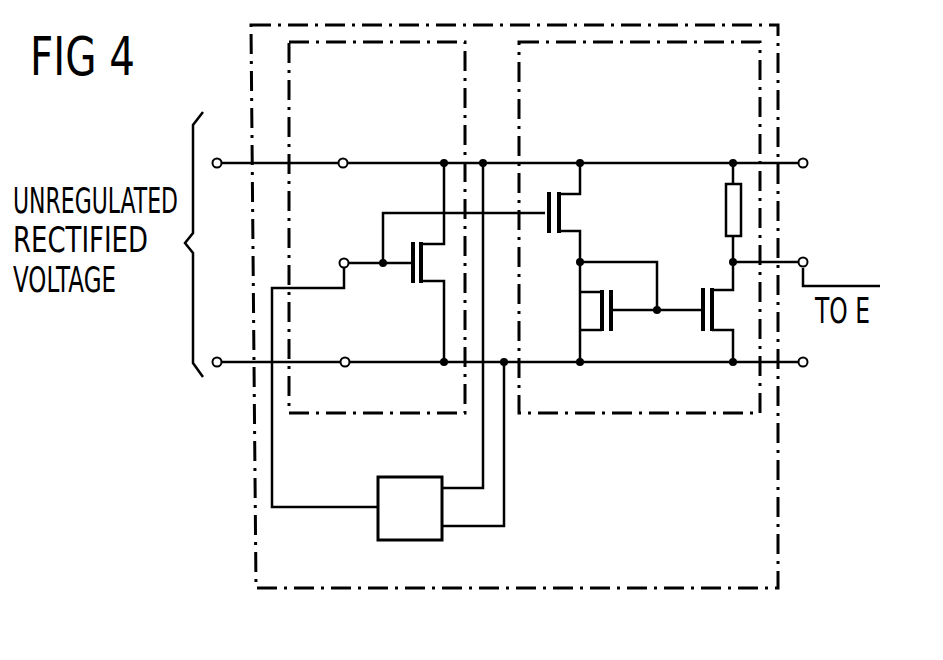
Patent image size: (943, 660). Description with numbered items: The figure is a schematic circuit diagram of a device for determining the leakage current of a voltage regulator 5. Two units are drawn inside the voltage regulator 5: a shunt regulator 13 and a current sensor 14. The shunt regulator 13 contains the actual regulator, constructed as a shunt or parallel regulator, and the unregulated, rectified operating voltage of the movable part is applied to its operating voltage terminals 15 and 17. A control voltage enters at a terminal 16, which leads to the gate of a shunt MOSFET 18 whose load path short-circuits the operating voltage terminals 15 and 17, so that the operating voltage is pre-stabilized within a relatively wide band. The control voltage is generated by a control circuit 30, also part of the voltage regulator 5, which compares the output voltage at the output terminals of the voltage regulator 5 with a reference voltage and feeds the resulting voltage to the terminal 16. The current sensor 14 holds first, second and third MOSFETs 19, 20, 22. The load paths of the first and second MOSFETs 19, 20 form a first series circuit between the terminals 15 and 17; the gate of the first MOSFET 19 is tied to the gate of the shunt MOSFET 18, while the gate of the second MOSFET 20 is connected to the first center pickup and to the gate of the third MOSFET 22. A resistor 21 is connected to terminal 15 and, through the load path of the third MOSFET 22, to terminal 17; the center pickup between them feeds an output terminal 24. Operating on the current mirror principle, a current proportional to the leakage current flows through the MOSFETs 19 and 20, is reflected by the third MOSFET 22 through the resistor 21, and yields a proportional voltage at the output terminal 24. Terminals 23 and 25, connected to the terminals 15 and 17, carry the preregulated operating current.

The voltage regulator 5 is at (780, 524).
The shunt regulator unit 13 is at (333, 413).
The current sensor unit 14 is at (651, 413).
The operating voltage terminal 15 is at (365, 141).
The control voltage terminal 16 is at (408, 360).
The operating voltage terminal 17 is at (365, 340).
The shunt MOSFET 18 is at (417, 285).
The first MOSFET 19 is at (565, 213).
The second MOSFET 20 is at (598, 310).
The resistor 21 is at (724, 199).
The third MOSFET 22 is at (703, 287).
The output terminal 23 is at (683, 161).
The output terminal 24 is at (789, 261).
The output terminal 25 is at (683, 361).
The control circuit 30 is at (443, 349).